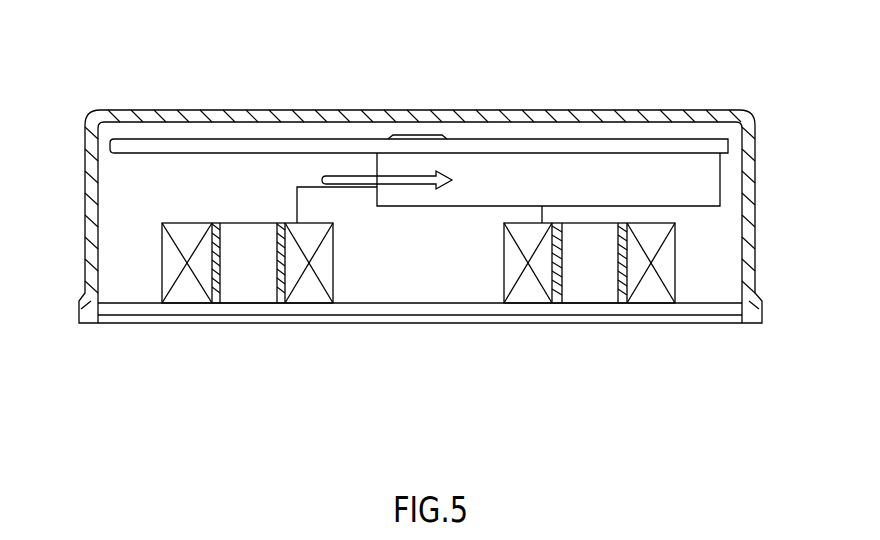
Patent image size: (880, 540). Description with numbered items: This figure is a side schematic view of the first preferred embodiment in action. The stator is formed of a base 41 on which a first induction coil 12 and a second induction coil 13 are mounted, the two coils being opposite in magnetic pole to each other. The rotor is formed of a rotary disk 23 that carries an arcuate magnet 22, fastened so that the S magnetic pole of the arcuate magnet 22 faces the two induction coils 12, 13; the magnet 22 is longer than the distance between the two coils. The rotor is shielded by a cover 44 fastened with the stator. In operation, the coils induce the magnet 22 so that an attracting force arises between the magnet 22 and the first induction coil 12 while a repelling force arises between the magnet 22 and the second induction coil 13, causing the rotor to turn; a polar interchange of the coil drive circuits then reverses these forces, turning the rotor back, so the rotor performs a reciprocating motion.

The cover 44 is at (155, 110).
The rotary disk 23 is at (278, 138).
The arcuate magnet 22 is at (578, 167).
The second induction coil 13 is at (187, 293).
The first induction coil 12 is at (648, 297).
The base 41 is at (473, 312).